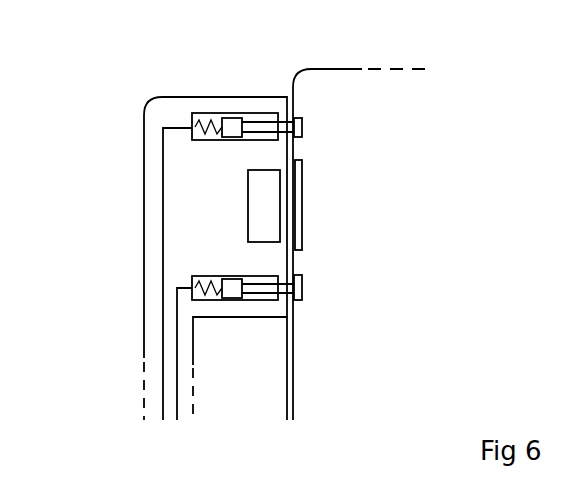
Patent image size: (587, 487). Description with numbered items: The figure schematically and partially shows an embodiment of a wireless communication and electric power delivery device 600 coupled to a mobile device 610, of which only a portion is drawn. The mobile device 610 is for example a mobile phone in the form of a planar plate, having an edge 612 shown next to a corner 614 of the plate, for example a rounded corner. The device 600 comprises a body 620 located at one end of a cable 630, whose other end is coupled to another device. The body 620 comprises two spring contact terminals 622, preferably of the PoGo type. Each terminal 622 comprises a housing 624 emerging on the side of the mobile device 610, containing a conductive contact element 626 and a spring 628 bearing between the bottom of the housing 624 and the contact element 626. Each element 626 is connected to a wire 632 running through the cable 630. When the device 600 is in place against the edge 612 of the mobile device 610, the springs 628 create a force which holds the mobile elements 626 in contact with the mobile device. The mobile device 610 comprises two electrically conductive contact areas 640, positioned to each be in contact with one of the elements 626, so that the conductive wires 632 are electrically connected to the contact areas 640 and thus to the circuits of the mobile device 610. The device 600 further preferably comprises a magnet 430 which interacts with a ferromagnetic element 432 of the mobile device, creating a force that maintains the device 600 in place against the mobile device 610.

The wireless communication and electric power delivery device 600 is at (150, 80).
The mobile device 610 is at (443, 164).
The edge 612 is at (345, 72).
The corner 614 is at (297, 78).
The body 620 is at (142, 258).
The cable 630 is at (143, 360).
The wire 632 is at (177, 325).
The spring contact terminal 622 is at (215, 108).
The housing 624 is at (208, 274).
The conductive contact element 626 is at (236, 118).
The spring 628 is at (206, 116).
The electrically conductive contact area 640 is at (303, 126).
The magnet 430 is at (258, 203).
The ferromagnetic element 432 is at (303, 208).